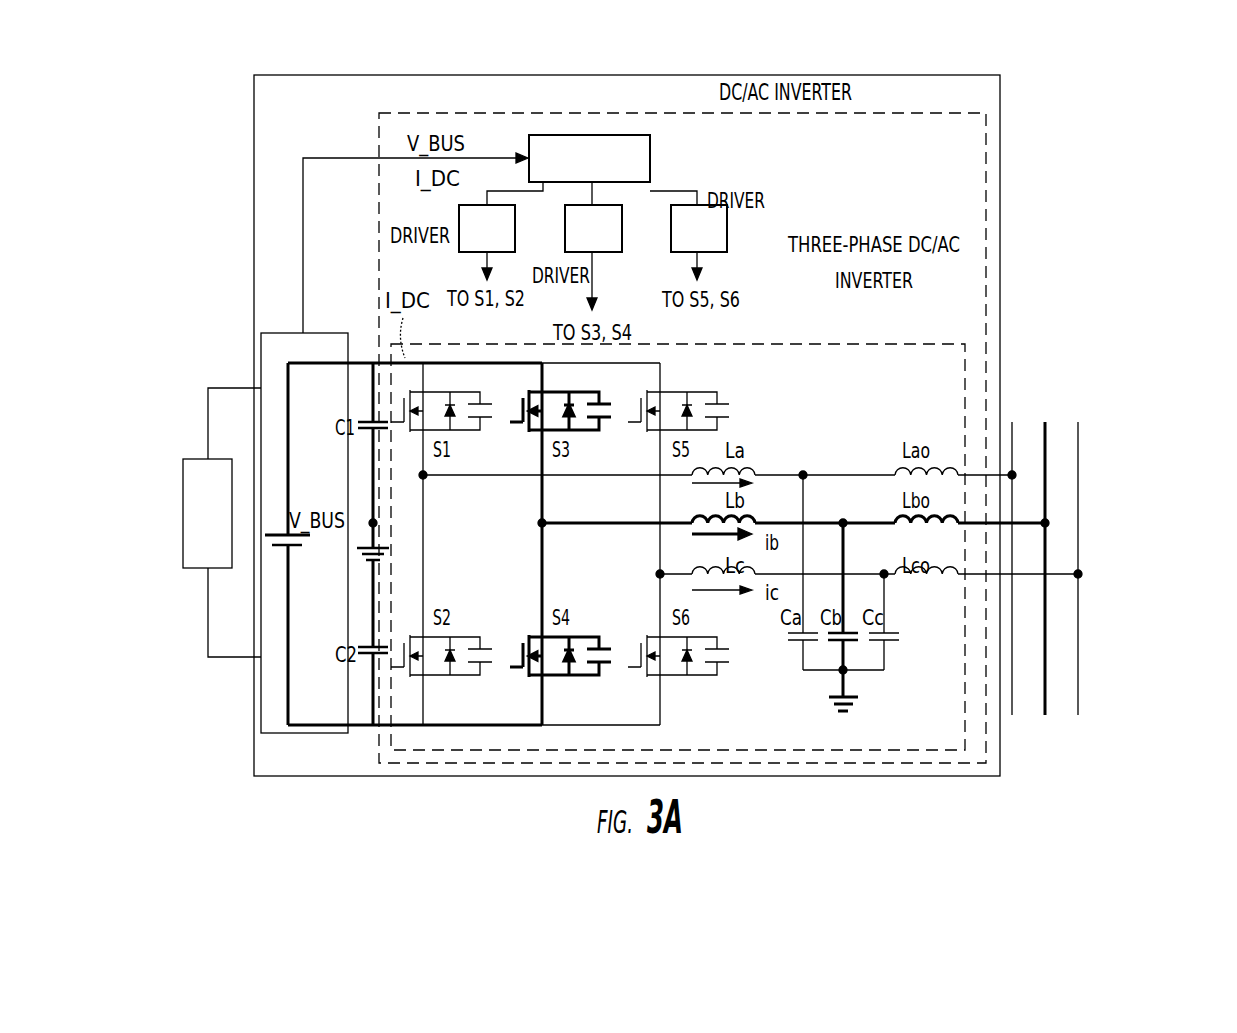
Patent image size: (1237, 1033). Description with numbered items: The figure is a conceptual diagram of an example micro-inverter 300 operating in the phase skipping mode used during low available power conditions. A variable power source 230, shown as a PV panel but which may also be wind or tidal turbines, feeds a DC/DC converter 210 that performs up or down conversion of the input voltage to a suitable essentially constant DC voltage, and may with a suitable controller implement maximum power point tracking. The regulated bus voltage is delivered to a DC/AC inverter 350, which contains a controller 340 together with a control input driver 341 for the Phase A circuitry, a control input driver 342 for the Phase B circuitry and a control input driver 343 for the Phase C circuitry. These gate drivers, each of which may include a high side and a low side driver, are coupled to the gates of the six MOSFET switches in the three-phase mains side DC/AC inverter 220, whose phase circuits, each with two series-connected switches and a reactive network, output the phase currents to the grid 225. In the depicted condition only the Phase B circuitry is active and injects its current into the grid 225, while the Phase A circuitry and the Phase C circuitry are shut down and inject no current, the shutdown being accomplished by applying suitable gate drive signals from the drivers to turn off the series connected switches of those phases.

The micro-inverter 300 is at (1000, 88).
The DC/AC inverter 350 is at (855, 113).
The controller 340 is at (650, 158).
The control input driver 341 is at (504, 242).
The control input driver 342 is at (610, 242).
The control input driver 343 is at (716, 242).
The mains side DC/AC inverter 220 is at (848, 344).
The DC/DC converter 210 is at (325, 332).
The power source 230 is at (183, 520).
The grid 225 is at (1067, 390).